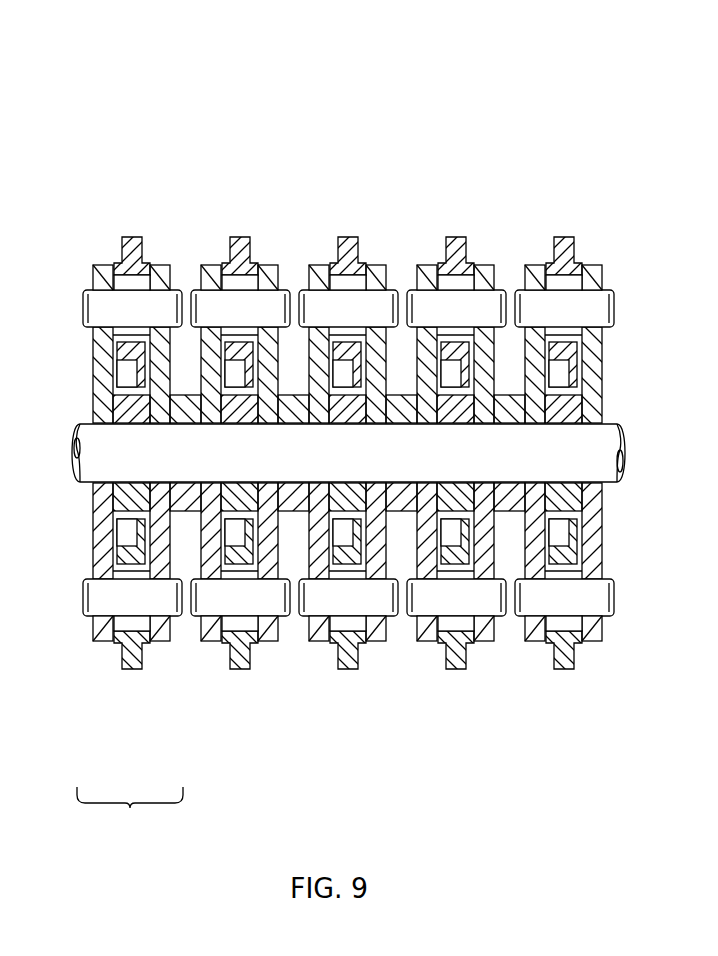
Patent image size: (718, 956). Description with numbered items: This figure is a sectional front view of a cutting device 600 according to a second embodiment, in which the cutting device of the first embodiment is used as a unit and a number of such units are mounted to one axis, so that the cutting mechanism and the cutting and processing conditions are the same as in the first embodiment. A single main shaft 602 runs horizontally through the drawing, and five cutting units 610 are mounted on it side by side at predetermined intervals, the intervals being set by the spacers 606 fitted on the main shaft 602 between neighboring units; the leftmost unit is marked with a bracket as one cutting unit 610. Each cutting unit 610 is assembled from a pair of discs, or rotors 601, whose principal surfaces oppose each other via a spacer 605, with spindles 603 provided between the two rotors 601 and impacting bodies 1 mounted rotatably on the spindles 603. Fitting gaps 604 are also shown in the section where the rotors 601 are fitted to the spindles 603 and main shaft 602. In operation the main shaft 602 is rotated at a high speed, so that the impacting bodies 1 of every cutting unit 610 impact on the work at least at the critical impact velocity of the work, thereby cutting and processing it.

The impacting body 1 is at (133, 236).
The cutting device 600 is at (352, 432).
The disc (rotor) 601 is at (100, 265).
The main shaft 602 is at (593, 445).
The spindle 603 is at (87, 312).
The fitting gap 604 is at (100, 338).
The spacer 605 is at (110, 411).
The spacer 606 is at (185, 394).
The cutting unit 610 is at (130, 813).